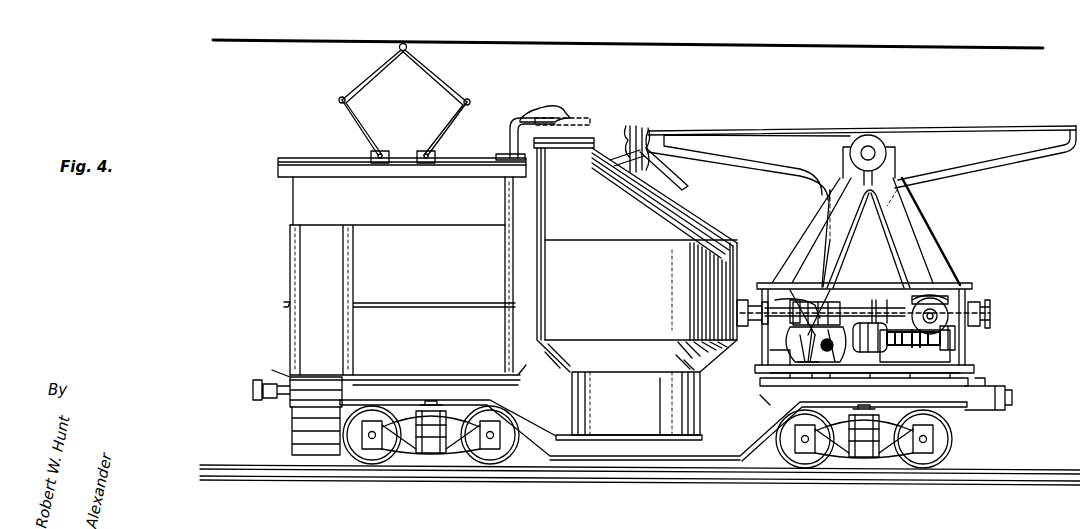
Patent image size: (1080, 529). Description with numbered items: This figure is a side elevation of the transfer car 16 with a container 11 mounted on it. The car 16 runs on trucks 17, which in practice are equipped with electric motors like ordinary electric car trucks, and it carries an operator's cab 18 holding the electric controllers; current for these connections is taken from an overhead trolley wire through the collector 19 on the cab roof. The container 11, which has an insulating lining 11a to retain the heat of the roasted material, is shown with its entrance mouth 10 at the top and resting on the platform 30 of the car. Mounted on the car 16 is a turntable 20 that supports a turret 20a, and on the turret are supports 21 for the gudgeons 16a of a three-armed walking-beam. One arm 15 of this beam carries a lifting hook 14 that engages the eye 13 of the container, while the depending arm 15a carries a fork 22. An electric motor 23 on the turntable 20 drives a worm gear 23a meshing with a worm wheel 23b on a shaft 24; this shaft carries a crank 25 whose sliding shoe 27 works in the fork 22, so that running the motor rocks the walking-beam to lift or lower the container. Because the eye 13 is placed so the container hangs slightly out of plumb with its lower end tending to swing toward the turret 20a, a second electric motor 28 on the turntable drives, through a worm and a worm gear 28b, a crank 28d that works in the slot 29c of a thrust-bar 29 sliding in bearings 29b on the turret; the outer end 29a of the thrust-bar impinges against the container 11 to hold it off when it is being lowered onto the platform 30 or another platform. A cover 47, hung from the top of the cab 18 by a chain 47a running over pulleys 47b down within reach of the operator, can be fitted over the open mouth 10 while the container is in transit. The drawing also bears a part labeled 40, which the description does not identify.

The entrance mouth 10 is at (560, 148).
The container 11 is at (718, 220).
The insulating lining 11a is at (636, 403).
The eye 13 is at (672, 178).
The lifting hook 14 is at (648, 134).
The arm 15 is at (738, 130).
The depending arm 15a is at (862, 230).
The transfer car 16 is at (562, 458).
The gudgeons 16a is at (870, 150).
The trucks 17 is at (866, 458).
The operator's cab 18 is at (302, 214).
The collector 19 is at (382, 75).
The turntable 20 is at (978, 366).
The turret 20a is at (968, 342).
The supports 21 is at (812, 222).
The fork 22 is at (792, 262).
The electric motor 23 is at (935, 292).
The worm gear 23a is at (835, 280).
The worm wheel 23b is at (800, 345).
The shaft 24 is at (765, 375).
The crank 25 is at (800, 390).
The sliding shoe 27 is at (828, 374).
The electric motor 28 is at (950, 306).
The worm gear 28b is at (955, 330).
The crank 28d is at (945, 300).
The thrust-bar 29 is at (858, 300).
The outer end 29a is at (740, 316).
The bearings 29b is at (745, 300).
The slot 29c is at (952, 331).
The platform 30 is at (690, 440).
The rail 40 is at (640, 497).
The cover 47 is at (590, 140).
The chain 47a is at (582, 118).
The pulleys 47b is at (548, 106).